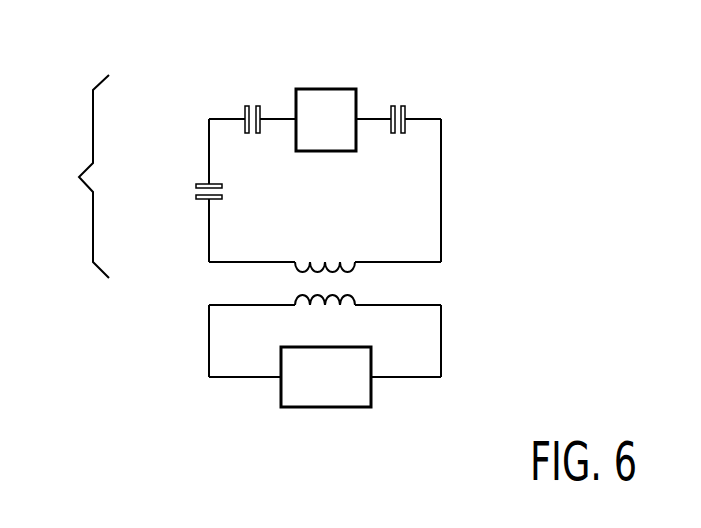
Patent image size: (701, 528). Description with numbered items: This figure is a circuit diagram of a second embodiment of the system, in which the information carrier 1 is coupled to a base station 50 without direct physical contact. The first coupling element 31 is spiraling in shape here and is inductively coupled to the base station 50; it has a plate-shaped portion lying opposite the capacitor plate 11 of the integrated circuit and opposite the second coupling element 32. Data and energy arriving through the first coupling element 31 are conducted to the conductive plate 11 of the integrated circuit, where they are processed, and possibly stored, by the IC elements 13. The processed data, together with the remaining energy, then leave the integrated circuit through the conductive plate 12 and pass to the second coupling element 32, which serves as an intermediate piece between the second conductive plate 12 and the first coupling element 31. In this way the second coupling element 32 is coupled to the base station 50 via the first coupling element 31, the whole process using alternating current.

The contactless data carrier / transponder 1 is at (76, 189).
The conductive plate 11 is at (391, 110).
The conductive plate 12 is at (261, 111).
The IC elements 13 is at (324, 89).
The first coupling element 31 is at (468, 193).
The second coupling element 32 is at (208, 150).
The base station 50 is at (354, 416).